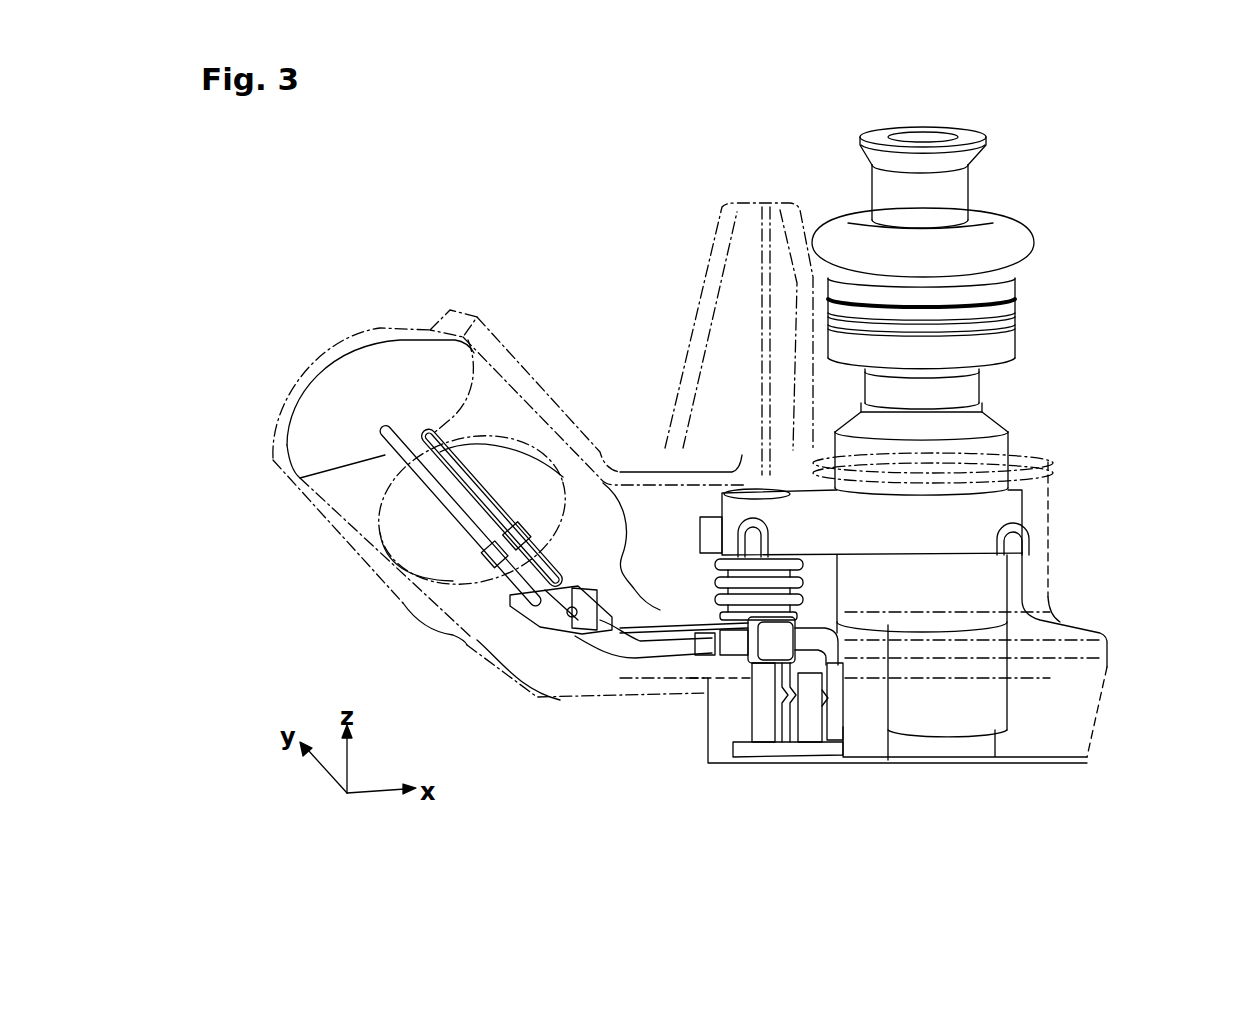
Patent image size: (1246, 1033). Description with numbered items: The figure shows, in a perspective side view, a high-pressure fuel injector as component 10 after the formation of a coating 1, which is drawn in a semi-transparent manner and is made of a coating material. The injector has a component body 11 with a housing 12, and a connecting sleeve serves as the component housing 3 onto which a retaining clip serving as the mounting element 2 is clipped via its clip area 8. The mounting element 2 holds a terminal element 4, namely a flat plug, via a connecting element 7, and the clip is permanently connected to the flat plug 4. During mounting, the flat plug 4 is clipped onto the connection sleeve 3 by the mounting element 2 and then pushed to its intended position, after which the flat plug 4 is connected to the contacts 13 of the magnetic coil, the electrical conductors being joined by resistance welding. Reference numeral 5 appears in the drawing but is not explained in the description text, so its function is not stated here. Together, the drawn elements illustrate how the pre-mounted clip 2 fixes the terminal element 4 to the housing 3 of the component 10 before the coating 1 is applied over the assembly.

The coating 1 is at (735, 307).
The mounting element 2 is at (907, 527).
The component housing 3 is at (998, 450).
The terminal element 4 is at (386, 424).
The fastening clips 5 is at (752, 546).
The connecting element 7 is at (740, 488).
The clip area 8 is at (1010, 507).
The component 10 is at (915, 471).
The component body 11 is at (967, 388).
The housing 12 is at (1022, 434).
The contacts 13 is at (762, 710).